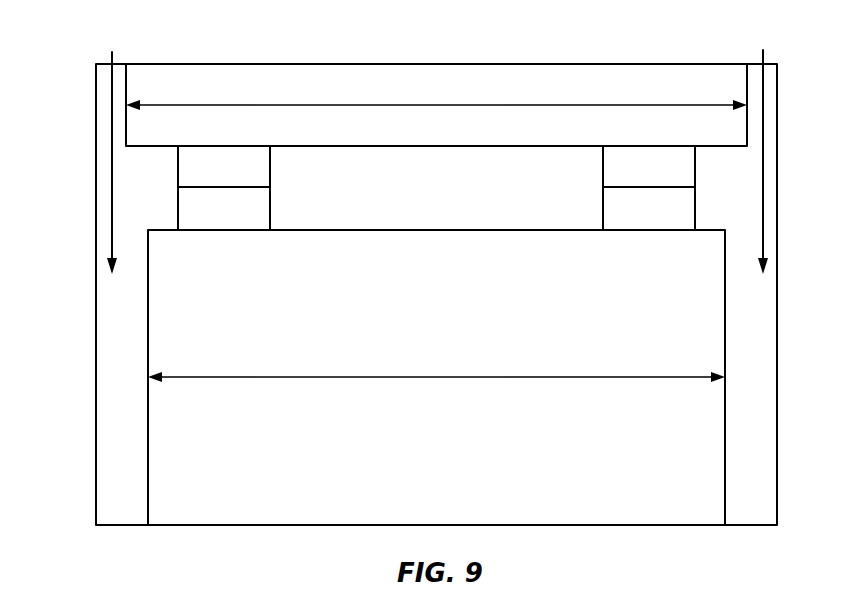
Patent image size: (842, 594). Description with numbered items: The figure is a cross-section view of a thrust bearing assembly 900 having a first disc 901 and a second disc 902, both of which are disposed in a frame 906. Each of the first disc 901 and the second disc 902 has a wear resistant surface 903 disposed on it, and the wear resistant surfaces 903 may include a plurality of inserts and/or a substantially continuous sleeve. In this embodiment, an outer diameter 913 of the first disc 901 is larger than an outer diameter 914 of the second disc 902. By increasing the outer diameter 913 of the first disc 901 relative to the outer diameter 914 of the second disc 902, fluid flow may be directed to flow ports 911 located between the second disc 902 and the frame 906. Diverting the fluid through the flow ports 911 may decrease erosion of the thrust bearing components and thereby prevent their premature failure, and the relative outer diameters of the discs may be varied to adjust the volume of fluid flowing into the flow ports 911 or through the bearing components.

The thrust bearing assembly 900 is at (634, 35).
The first disc 901 is at (358, 82).
The second disc 902 is at (587, 505).
The wear resistant surface 903 is at (255, 165).
The frame 906 is at (96, 372).
The flow ports 911 is at (118, 405).
The outer diameter of first disc 913 is at (305, 104).
The outer diameter of second disc 914 is at (540, 378).